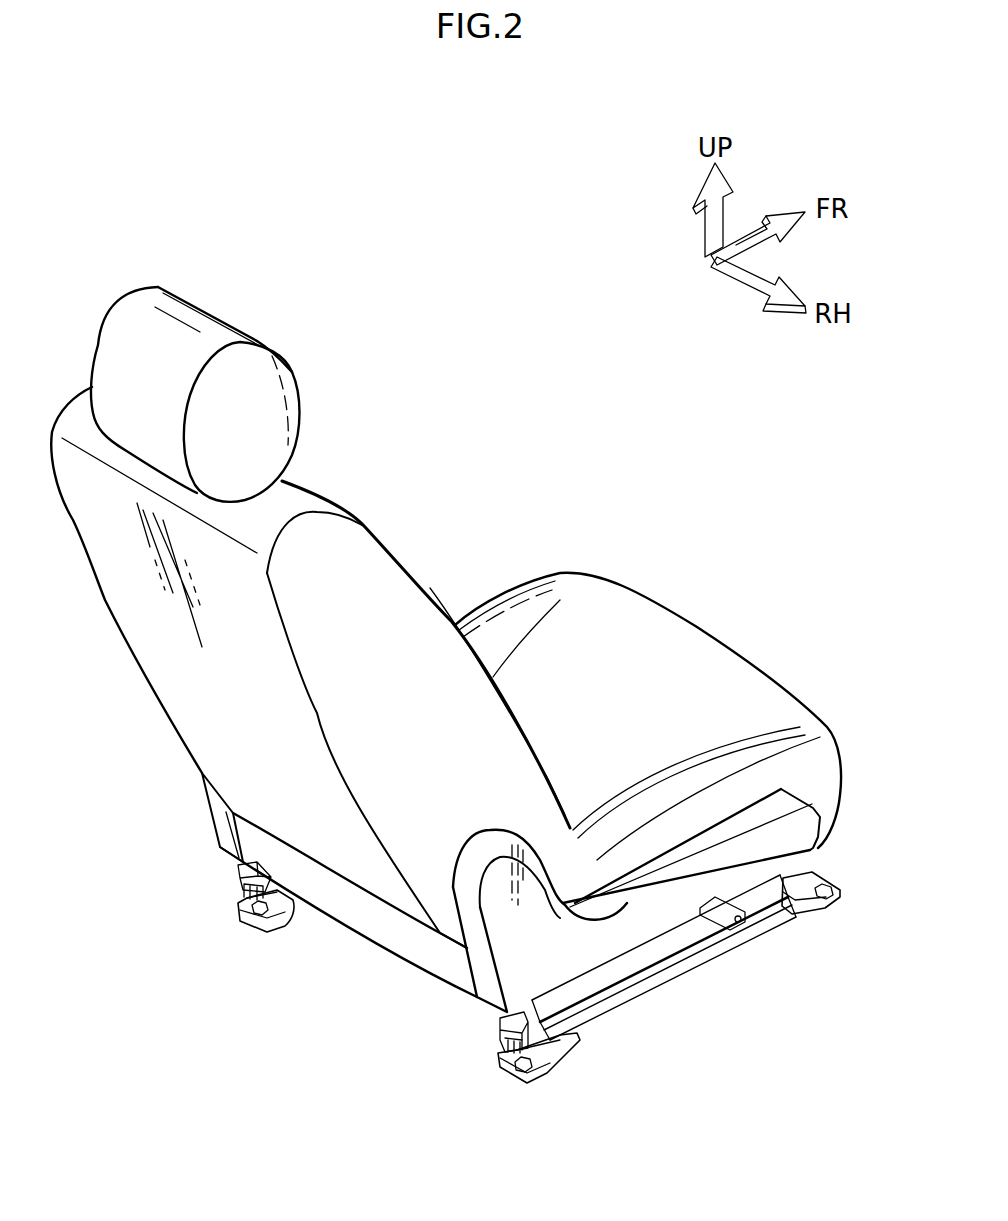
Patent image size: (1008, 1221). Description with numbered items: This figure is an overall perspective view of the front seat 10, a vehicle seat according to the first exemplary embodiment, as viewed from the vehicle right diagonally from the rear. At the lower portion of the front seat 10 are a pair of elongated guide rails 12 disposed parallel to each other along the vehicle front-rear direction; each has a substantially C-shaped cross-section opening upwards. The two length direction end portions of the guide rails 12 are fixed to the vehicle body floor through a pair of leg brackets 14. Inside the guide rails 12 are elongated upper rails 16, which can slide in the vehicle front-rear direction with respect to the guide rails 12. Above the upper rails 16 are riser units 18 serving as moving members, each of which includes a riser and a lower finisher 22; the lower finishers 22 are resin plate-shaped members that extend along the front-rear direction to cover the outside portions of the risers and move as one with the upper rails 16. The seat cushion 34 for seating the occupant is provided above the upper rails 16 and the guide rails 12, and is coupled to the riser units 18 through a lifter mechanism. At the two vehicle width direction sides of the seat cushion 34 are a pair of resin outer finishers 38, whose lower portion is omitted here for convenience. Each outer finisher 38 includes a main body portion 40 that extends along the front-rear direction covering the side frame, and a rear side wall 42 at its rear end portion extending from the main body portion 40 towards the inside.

The front seat 10 is at (388, 282).
The guide rails 12 is at (663, 980).
The leg brackets 14 is at (272, 926).
The upper rails 16 is at (245, 892).
The riser units 18 is at (315, 958).
The lower finishers 22 is at (243, 870).
The seat cushion 34 is at (700, 626).
The outer finishers 38 is at (205, 797).
The main body portions 40 is at (790, 851).
The rear side walls 42 is at (215, 818).